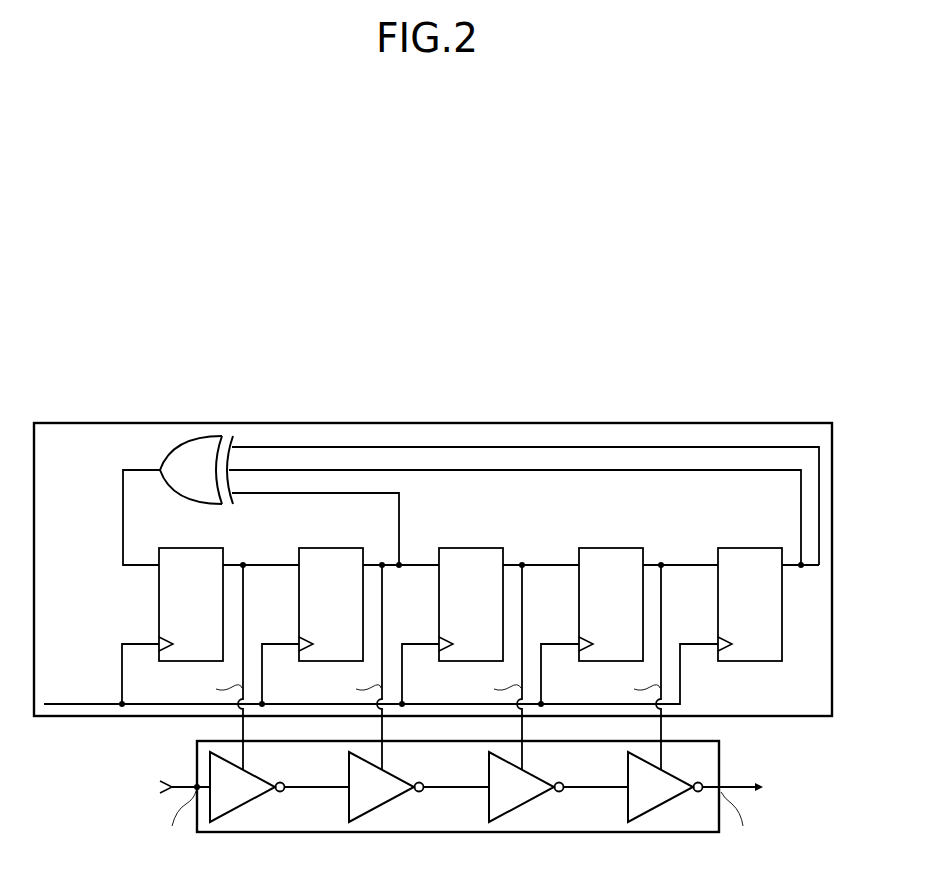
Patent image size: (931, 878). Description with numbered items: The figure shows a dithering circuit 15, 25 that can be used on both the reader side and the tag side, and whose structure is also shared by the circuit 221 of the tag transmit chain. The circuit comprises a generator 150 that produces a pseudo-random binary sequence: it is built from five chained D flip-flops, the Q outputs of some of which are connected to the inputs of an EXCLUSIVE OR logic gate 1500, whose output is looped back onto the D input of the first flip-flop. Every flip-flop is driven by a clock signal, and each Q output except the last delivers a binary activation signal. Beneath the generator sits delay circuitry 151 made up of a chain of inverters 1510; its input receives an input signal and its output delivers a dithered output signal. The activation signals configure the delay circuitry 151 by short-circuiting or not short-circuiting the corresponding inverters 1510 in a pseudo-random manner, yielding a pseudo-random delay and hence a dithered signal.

The circuit 15 is at (433, 600).
The circuit 25 is at (433, 600).
The circuit 221 is at (558, 376).
The generator 150 is at (431, 422).
The EXCLUSIVE OR logic gate 1500 is at (206, 437).
The delay circuitry 151 is at (490, 834).
The inverters 1510 is at (386, 806).